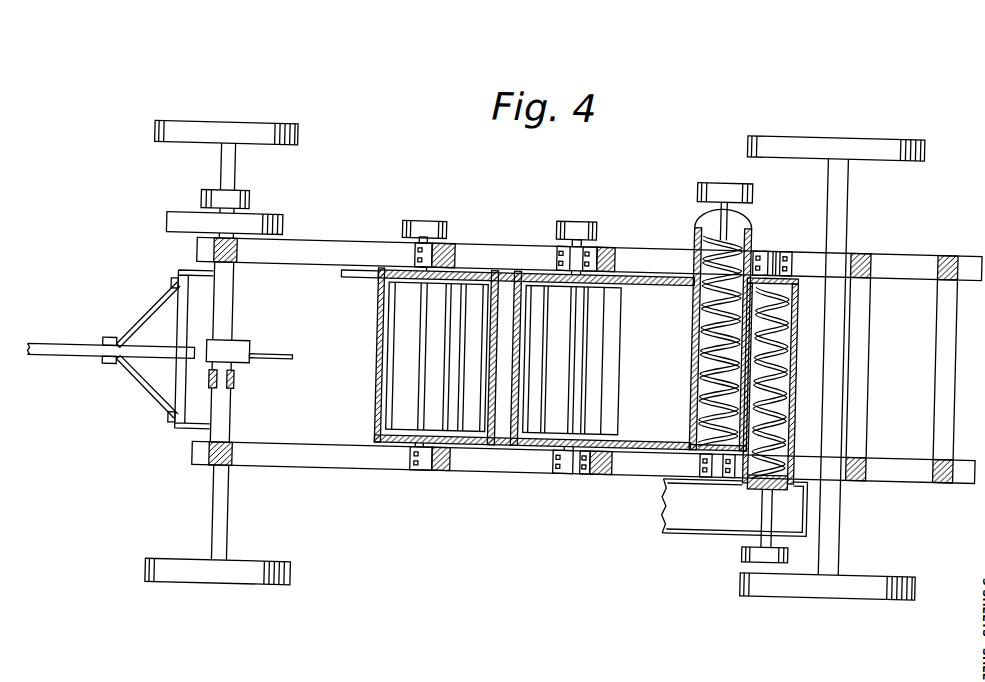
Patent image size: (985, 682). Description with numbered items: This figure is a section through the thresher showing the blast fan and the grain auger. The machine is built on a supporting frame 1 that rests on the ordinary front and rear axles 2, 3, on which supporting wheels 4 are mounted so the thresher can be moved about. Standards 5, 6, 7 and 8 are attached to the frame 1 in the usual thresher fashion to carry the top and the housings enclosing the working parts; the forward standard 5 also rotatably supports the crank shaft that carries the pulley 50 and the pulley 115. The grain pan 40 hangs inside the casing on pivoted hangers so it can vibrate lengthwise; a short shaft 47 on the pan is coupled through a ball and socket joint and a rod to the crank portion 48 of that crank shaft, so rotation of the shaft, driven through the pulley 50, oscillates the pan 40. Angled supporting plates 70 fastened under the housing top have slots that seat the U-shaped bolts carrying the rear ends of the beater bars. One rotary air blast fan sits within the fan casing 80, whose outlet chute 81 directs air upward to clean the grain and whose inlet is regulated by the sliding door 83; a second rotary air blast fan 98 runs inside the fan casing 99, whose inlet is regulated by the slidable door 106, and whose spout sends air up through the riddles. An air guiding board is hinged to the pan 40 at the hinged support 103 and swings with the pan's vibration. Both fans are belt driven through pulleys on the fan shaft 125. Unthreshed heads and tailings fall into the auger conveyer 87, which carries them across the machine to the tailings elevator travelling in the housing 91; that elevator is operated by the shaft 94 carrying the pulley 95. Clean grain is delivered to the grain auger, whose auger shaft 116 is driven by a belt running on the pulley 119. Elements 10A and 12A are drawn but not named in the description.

The supporting frame 1 is at (351, 238).
The front axle 2 is at (236, 173).
The rear axle 3 is at (848, 212).
The supporting wheels 4 is at (276, 121).
The standard 5 is at (236, 446).
The standard 6 is at (452, 247).
The standard 7 is at (620, 252).
The standard 8 is at (941, 262).
The bearing 10A is at (585, 213).
The bearing bracket 12A is at (436, 214).
The grain pan 40 is at (236, 294).
The short shaft 47 is at (297, 358).
The crank portion 48 is at (237, 342).
The pulley 50 is at (283, 225).
The angled supporting plates 70 is at (602, 343).
The fan casing 80 is at (514, 445).
The outlet chute 81 is at (664, 424).
The sliding door 83 is at (506, 268).
The auger conveyer 87 is at (760, 474).
The housing 91 is at (690, 531).
The shaft 94 is at (779, 504).
The pulley 95 is at (752, 549).
The rotary air blast fan 98 is at (390, 404).
The fan casing 99 is at (379, 330).
The hinged support 103 is at (599, 243).
The slidable door 106 is at (350, 275).
The pulley 115 is at (249, 199).
The auger shaft 116 is at (715, 197).
The pulley 119 is at (723, 171).
The fan shaft 125 is at (402, 226).